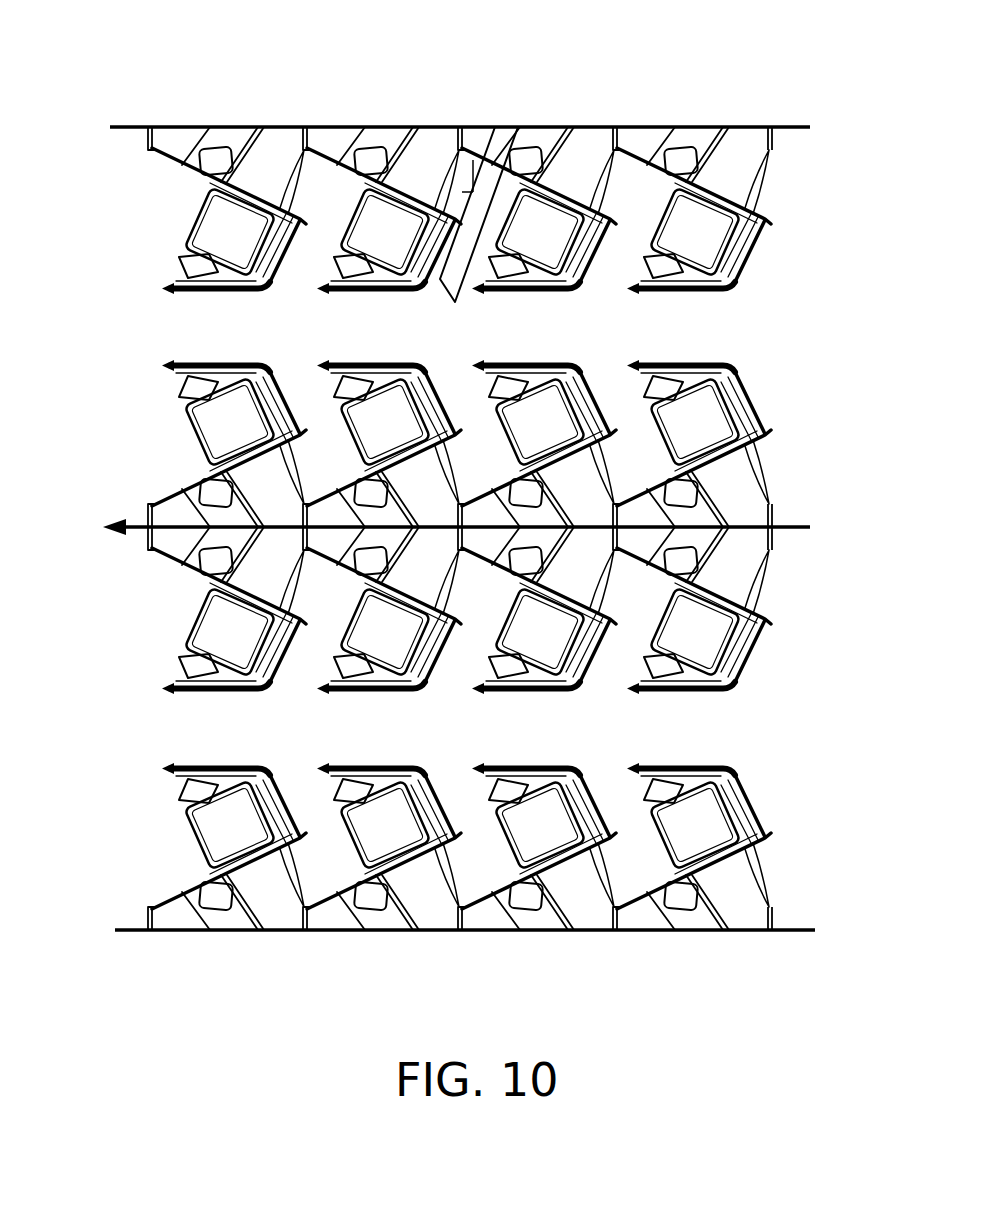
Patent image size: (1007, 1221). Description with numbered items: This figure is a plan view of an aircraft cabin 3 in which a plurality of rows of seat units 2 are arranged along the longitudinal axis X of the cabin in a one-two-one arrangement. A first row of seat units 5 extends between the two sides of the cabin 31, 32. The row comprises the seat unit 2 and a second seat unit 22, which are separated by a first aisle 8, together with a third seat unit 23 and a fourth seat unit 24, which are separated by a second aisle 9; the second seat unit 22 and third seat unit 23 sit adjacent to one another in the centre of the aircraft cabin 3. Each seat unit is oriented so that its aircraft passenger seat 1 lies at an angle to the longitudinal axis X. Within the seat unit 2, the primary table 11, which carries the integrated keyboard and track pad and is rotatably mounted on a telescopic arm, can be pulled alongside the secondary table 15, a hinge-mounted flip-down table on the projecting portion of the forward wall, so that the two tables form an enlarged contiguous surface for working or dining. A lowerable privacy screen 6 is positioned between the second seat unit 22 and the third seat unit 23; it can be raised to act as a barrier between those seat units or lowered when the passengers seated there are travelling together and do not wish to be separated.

The aircraft passenger seat 1 is at (537, 237).
The seat unit 2 is at (563, 137).
The aircraft cabin 3 is at (160, 112).
The first row of seat units 5 is at (464, 96).
The lowerable privacy screen 6 is at (486, 520).
The first aisle 8 is at (262, 338).
The second aisle 9 is at (262, 722).
The primary table 11 is at (497, 190).
The secondary table 15 is at (440, 280).
The second seat unit 22 is at (553, 382).
The third seat unit 23 is at (551, 666).
The fourth seat unit 24 is at (584, 917).
The first side of the cabin 31 is at (718, 127).
The second side of the cabin 32 is at (222, 932).